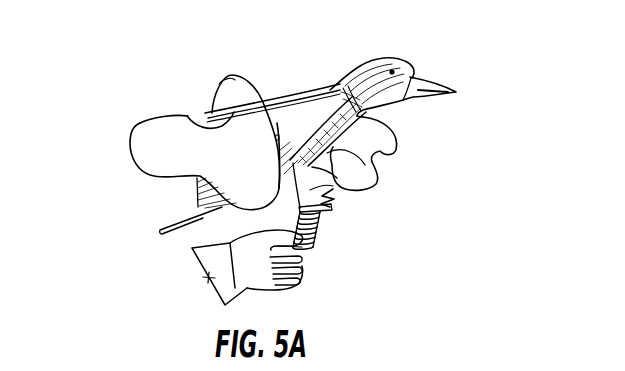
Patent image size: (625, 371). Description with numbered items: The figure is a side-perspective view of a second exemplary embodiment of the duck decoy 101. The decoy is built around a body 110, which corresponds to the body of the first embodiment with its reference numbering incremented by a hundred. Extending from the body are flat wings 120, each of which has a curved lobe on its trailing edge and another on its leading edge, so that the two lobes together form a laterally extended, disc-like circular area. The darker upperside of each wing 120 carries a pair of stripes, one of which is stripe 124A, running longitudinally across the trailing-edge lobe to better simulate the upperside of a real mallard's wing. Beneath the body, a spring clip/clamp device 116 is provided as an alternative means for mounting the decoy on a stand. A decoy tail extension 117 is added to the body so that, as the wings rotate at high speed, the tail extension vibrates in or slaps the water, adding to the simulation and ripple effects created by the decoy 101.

The decoy 101 is at (339, 45).
The body 110 is at (331, 175).
The spring clip/clamp device 116 is at (323, 232).
The decoy tail extension 117 is at (188, 232).
The wing 120 is at (189, 97).
The stripe 124A is at (215, 88).